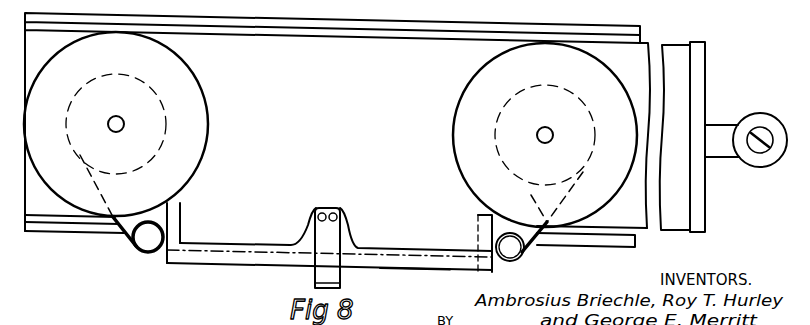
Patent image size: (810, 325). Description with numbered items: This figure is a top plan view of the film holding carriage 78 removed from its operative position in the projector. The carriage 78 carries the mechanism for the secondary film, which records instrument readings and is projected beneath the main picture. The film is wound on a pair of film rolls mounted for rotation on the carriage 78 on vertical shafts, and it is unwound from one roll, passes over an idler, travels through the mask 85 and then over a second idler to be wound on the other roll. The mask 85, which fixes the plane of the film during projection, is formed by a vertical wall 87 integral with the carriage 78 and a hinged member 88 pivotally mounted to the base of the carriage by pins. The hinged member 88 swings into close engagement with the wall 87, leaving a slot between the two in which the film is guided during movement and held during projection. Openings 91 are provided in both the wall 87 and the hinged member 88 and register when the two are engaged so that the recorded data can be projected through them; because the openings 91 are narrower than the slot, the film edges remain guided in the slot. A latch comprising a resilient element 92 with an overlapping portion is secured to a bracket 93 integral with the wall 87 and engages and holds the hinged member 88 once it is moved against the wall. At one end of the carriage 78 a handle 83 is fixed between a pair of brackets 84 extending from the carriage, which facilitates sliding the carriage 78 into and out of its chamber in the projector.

The carriage 78 is at (316, 98).
The handle 83 is at (760, 168).
The brackets 84 is at (718, 159).
The mask 85 is at (268, 258).
The vertical wall 87 is at (433, 253).
The hinged member 88 is at (415, 267).
The openings 91 is at (330, 241).
The resilient element 92 is at (335, 280).
The bracket 93 is at (338, 219).